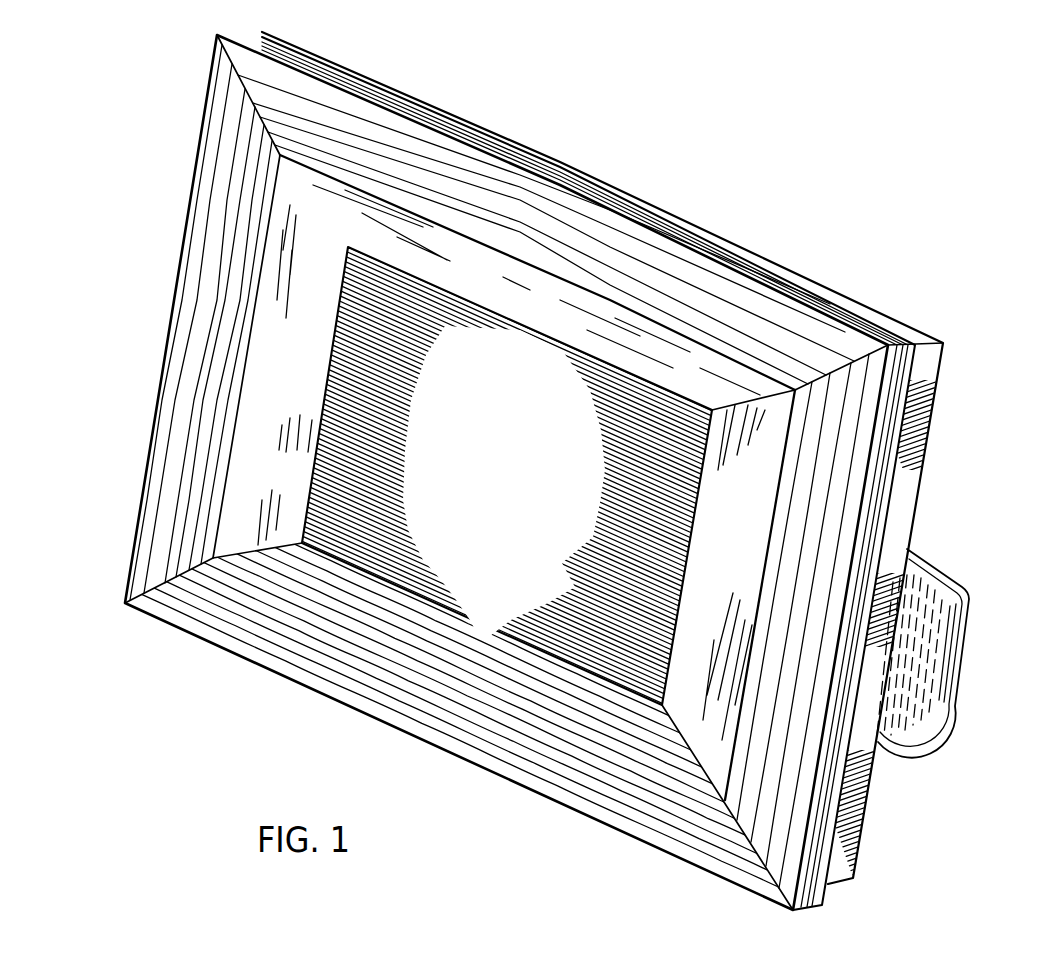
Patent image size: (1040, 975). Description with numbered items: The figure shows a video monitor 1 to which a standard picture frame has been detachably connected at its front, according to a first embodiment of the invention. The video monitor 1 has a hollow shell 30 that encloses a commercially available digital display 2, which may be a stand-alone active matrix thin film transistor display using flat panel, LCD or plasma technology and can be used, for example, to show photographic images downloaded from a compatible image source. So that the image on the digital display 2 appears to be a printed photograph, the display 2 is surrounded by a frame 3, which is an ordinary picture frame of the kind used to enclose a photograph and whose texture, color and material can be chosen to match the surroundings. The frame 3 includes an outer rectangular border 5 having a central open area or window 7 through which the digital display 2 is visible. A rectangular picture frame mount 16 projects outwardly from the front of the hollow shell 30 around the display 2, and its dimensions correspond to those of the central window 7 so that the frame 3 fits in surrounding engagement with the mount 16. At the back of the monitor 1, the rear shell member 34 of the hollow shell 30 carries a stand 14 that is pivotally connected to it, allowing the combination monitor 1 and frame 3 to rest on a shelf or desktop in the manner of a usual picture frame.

The video monitor 1 is at (965, 385).
The digital display 2 is at (502, 484).
The frame 3 is at (638, 862).
The border 5 is at (427, 706).
The central window 7 is at (323, 403).
The stand 14 is at (956, 702).
The picture frame mount 16 is at (608, 342).
The hollow shell 30 is at (667, 204).
The rear shell member 34 is at (897, 522).